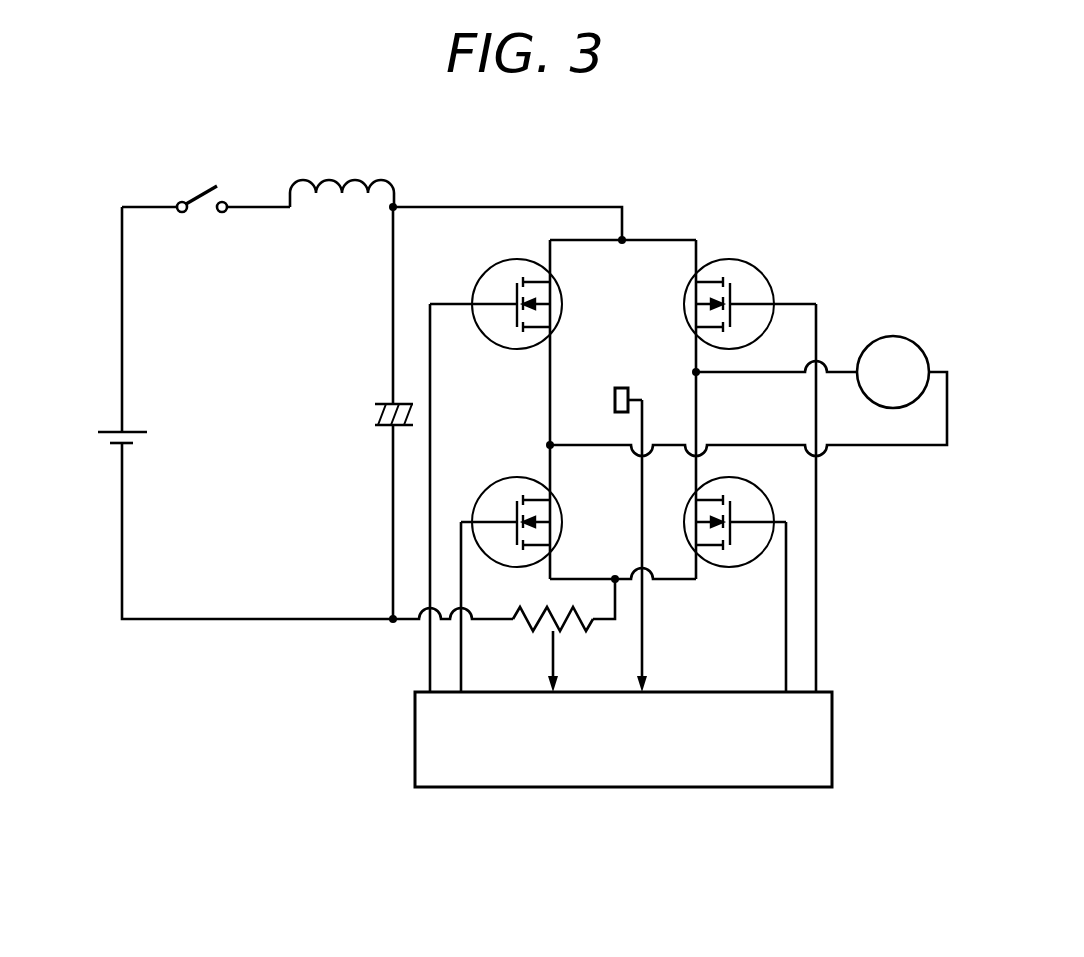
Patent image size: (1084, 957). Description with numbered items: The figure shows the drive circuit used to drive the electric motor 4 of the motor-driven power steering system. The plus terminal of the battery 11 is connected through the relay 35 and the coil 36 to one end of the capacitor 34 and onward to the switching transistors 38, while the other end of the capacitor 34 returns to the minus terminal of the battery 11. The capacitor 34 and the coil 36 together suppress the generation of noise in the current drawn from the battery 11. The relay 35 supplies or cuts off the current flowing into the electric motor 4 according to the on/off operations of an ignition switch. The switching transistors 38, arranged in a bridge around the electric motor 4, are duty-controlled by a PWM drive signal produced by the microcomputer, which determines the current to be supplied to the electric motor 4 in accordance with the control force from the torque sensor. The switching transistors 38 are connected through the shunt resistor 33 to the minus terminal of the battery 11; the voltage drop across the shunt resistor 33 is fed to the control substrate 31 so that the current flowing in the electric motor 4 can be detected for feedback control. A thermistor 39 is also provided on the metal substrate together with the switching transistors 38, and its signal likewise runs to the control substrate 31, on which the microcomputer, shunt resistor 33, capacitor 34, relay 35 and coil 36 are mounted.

The relay 35 is at (200, 190).
The coil 36 is at (350, 181).
The switching transistors 38 is at (738, 261).
The electric motor 4 is at (896, 337).
The thermistor 39 is at (626, 387).
The capacitor 34 is at (370, 413).
The battery 11 is at (104, 446).
The shunt resistor 33 is at (558, 630).
The control substrate 31 is at (835, 719).